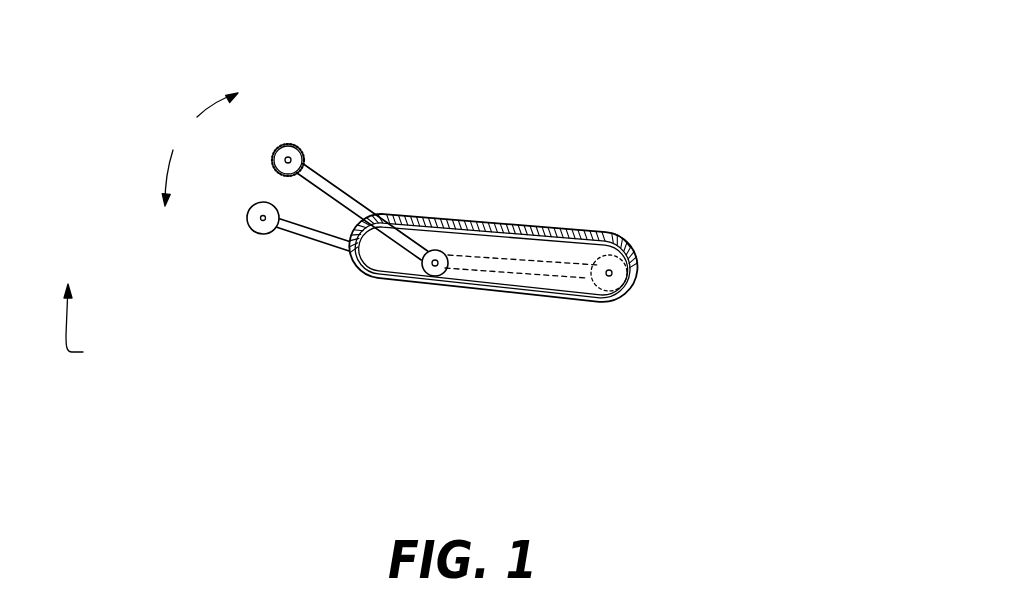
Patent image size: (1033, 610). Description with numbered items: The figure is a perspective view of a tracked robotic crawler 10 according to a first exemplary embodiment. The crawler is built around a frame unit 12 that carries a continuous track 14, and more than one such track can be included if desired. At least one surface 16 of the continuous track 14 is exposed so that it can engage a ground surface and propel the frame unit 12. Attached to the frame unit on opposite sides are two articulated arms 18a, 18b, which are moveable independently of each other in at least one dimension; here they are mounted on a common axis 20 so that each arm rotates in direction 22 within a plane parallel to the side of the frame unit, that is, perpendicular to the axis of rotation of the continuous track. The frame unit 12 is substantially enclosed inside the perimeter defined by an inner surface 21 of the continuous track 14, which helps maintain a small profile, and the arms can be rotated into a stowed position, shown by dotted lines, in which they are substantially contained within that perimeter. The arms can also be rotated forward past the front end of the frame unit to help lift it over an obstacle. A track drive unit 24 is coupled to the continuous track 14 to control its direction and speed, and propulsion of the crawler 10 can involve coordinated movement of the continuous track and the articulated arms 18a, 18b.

The tracked robotic crawler 10 is at (410, 198).
The frame unit 12 is at (382, 261).
The continuous track 14 is at (540, 225).
The surface 16 is at (538, 297).
The articulated arm 18a is at (320, 181).
The articulated arm 18b is at (308, 231).
The common axis 20 is at (437, 266).
The inner surface 21 is at (607, 238).
The direction 22 is at (200, 149).
The track drive unit 24 is at (94, 328).